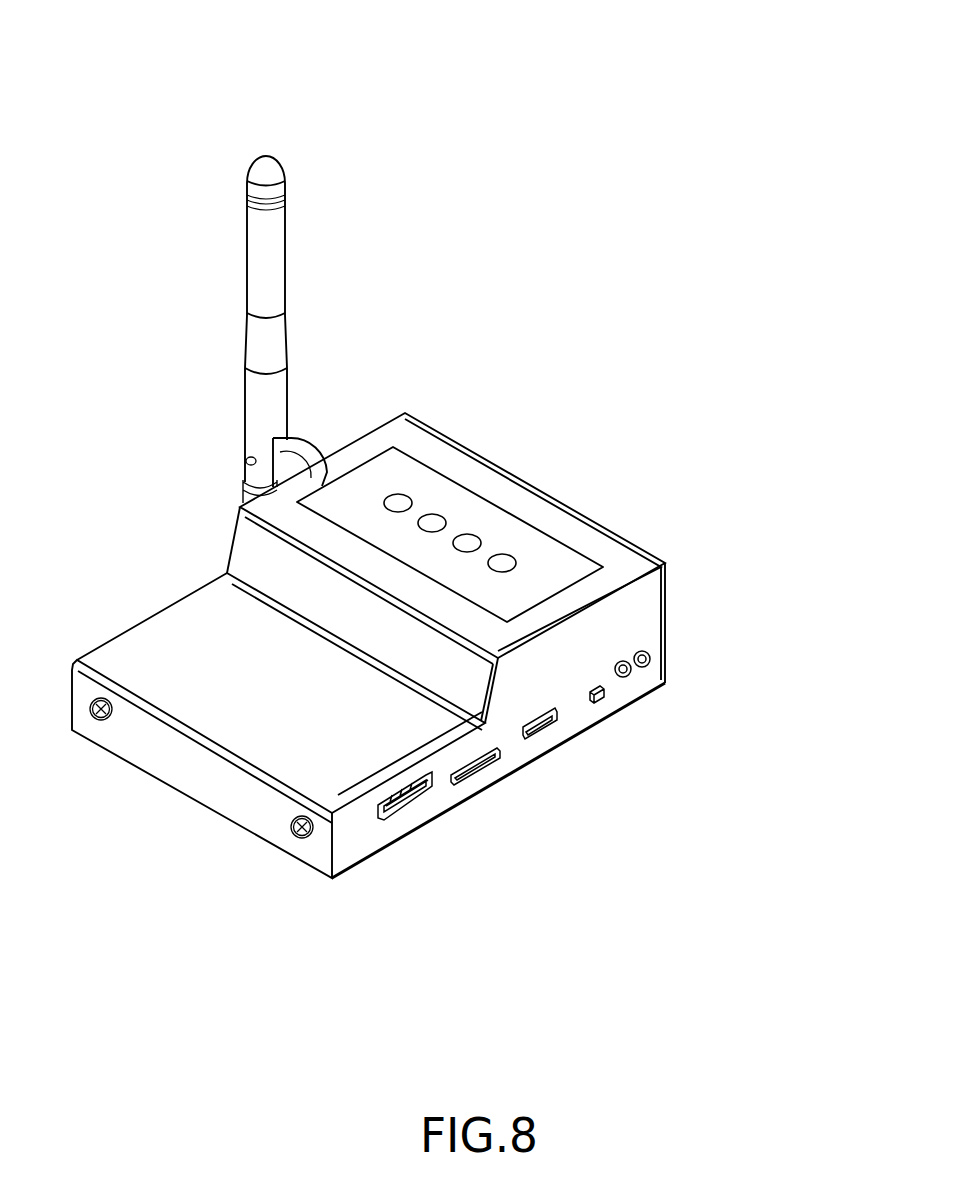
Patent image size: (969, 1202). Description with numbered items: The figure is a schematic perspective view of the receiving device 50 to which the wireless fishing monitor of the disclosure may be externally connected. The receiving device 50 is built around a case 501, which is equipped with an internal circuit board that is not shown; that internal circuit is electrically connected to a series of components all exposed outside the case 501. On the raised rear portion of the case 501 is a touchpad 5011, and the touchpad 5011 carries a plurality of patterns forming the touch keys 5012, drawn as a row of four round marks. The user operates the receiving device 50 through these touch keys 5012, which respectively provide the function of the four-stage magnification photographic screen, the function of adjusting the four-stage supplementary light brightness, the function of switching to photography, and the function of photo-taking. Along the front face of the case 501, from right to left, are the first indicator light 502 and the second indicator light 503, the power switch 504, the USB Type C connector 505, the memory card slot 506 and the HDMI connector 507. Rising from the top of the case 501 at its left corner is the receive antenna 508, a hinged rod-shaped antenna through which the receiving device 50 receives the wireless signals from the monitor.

The receiving device 50 is at (409, 40).
The case 501 is at (598, 543).
The touchpad 5011 is at (507, 533).
The touch keys 5012 is at (398, 503).
The first indicator light 502 is at (650, 660).
The second indicator light 503 is at (628, 675).
The power switch 504 is at (600, 705).
The USB Type C connector 505 is at (535, 732).
The memory card slot 506 is at (470, 772).
The HDMI connector 507 is at (398, 803).
The receive antenna 508 is at (278, 263).